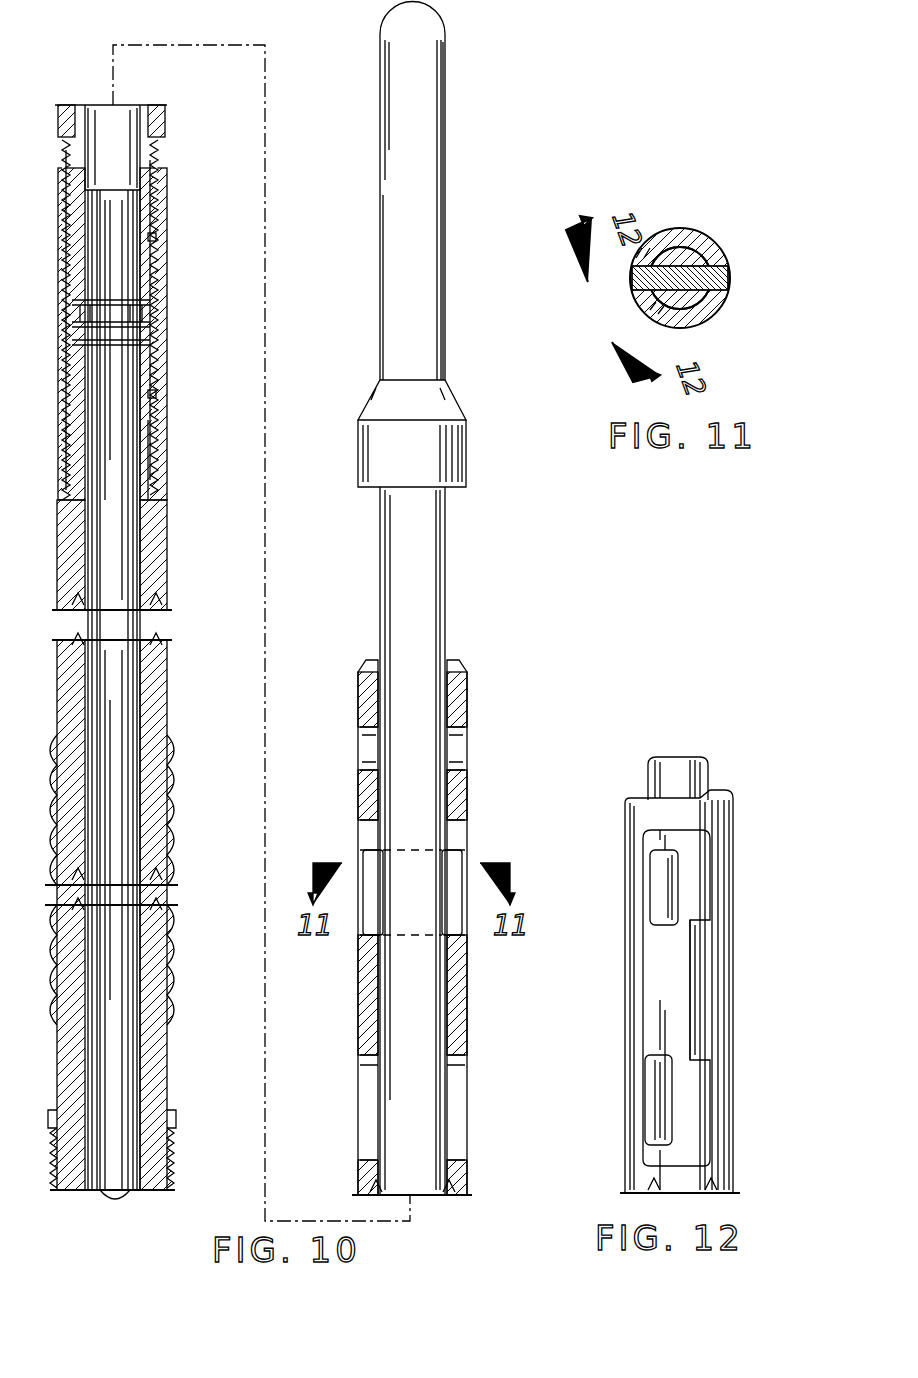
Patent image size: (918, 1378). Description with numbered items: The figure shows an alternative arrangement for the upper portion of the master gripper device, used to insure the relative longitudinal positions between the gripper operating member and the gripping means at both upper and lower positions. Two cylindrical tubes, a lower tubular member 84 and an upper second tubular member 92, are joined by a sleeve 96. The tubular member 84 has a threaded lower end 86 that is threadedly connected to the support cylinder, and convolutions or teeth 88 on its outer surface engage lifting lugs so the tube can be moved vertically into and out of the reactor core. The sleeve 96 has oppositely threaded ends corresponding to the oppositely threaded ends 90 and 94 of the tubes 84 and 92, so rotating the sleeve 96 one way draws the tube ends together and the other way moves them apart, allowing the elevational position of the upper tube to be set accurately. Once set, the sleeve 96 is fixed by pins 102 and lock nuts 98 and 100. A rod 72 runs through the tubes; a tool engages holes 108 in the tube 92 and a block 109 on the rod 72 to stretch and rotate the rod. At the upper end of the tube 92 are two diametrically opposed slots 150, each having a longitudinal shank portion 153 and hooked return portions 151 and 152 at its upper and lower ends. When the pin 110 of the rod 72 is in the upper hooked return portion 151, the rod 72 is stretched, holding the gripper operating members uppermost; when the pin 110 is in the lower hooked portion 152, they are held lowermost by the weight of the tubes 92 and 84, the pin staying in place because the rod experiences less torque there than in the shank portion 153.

In FIG. 11, the rod 72 is at (692, 248).
In FIG. 12, the rod 72 is at (695, 772).
In FIG. 10, the tubular member 84 is at (155, 725).
In FIG. 10, the threaded lower end 86 is at (160, 1143).
In FIG. 10, the convolutions or teeth 88 is at (175, 875).
In FIG. 10, the threaded end 90 is at (60, 400).
In FIG. 11, the second tubular member 92 is at (665, 230).
In FIG. 12, the second tubular member 92 is at (640, 994).
In FIG. 10, the threaded end 94 is at (60, 280).
In FIG. 10, the sleeve 96 is at (165, 340).
In FIG. 10, the lock nut 98 is at (165, 200).
In FIG. 10, the lock nut 100 is at (160, 470).
In FIG. 10, the pins 102 is at (158, 240).
In FIG. 10, the holes 108 is at (458, 750).
In FIG. 10, the block 109 is at (450, 460).
In FIG. 10, the pin 110 is at (370, 862).
In FIG. 11, the pin 110 is at (728, 278).
In FIG. 10, the slot 150 is at (458, 840).
In FIG. 12, the slot 150 is at (705, 842).
In FIG. 10, the upper hooked return portion 151 is at (462, 940).
In FIG. 11, the upper hooked return portion 151 is at (632, 285).
In FIG. 12, the upper hooked return portion 151 is at (655, 890).
In FIG. 10, the lower hooked return portion 152 is at (462, 1058).
In FIG. 12, the lower hooked return portion 152 is at (650, 1090).
In FIG. 11, the longitudinal shank portion 153 is at (648, 312).
In FIG. 12, the longitudinal shank portion 153 is at (705, 995).